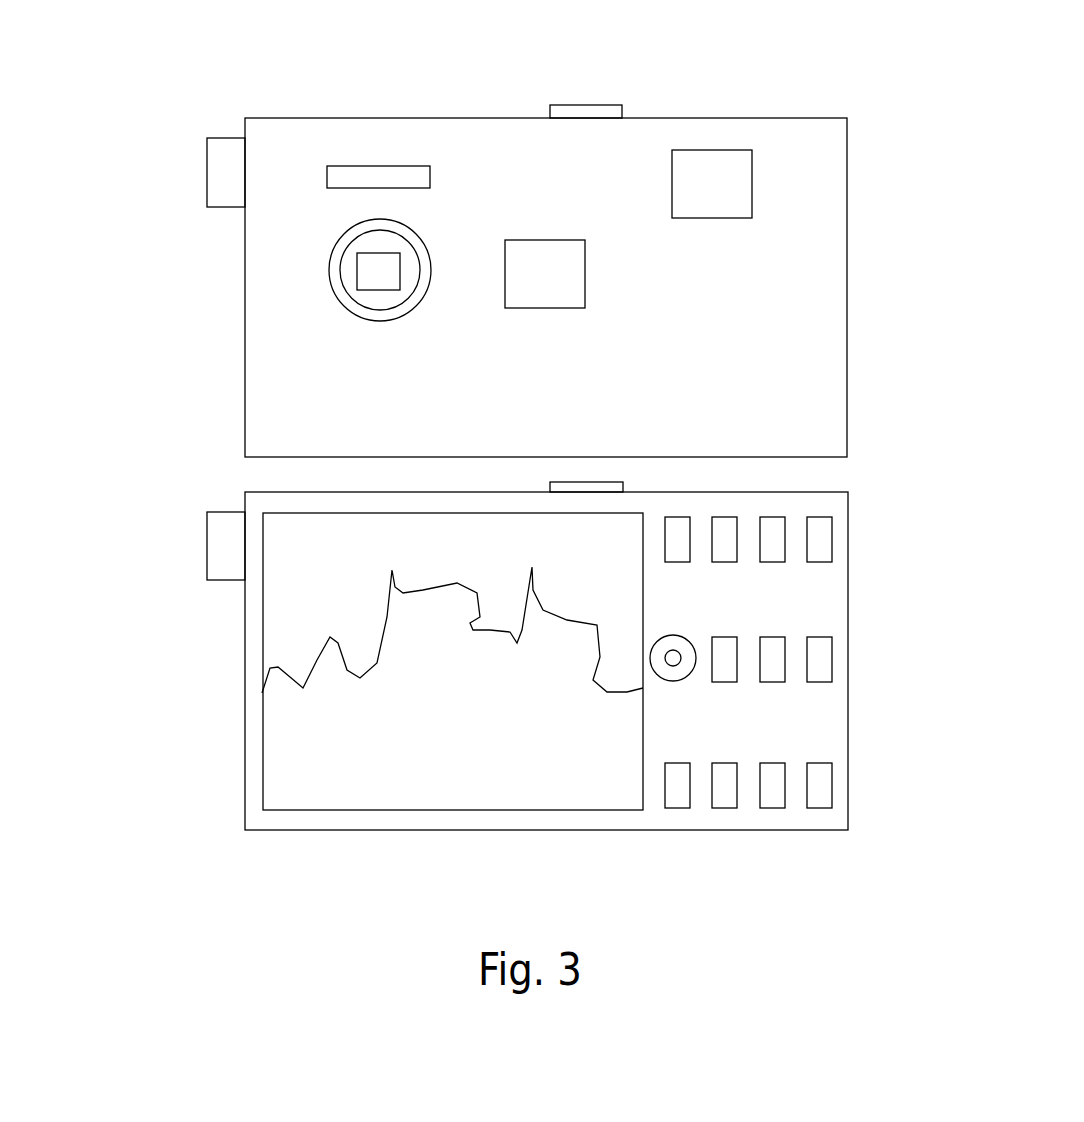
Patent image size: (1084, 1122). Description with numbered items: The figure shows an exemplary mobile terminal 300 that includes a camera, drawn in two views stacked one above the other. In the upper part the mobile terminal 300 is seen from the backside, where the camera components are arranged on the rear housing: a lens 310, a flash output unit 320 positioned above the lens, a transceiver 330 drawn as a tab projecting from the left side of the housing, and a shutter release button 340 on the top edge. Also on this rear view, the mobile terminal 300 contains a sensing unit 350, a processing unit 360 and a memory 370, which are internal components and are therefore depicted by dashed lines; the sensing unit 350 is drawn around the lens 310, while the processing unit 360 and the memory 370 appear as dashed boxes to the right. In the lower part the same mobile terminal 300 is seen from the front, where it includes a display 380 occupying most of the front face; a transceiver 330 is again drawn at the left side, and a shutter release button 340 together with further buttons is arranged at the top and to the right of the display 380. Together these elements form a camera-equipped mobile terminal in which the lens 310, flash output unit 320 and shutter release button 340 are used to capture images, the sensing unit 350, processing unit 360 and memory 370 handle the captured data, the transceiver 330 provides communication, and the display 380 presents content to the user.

The mobile terminal 300 is at (184, 445).
The lens 310 is at (395, 253).
The flash output unit 320 is at (360, 173).
The transceiver 330 is at (229, 563).
The shutter release button 340 is at (580, 102).
The sensing unit 350 is at (380, 278).
The processing unit 360 is at (545, 278).
The memory 370 is at (707, 187).
The display 380 is at (392, 797).